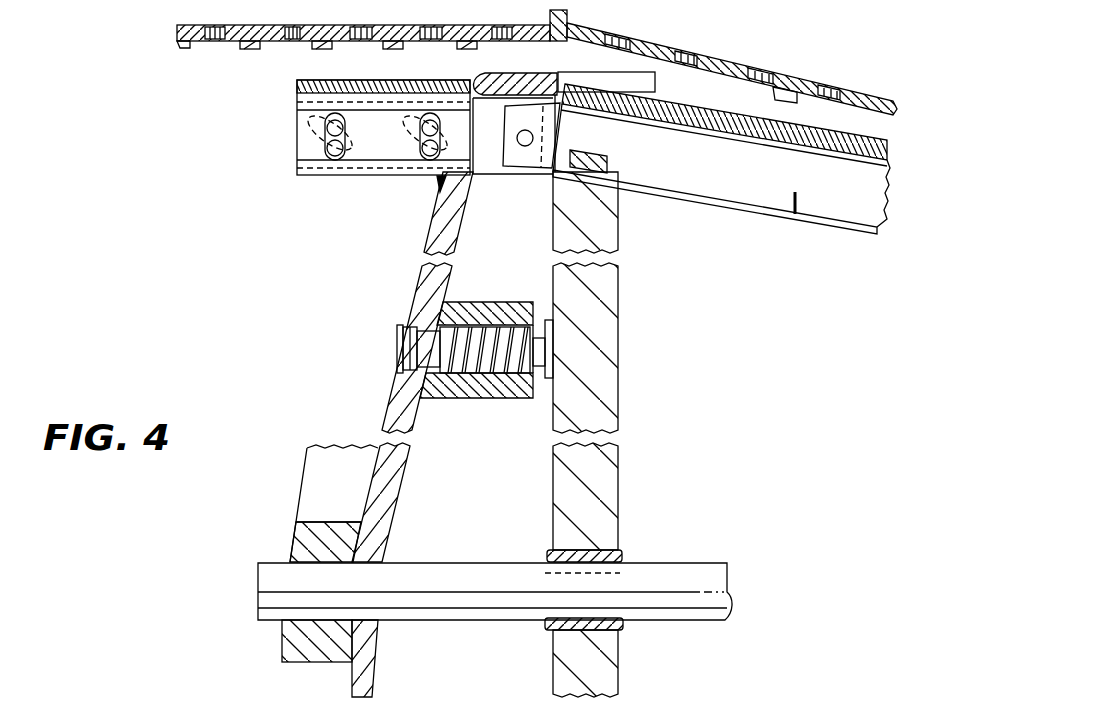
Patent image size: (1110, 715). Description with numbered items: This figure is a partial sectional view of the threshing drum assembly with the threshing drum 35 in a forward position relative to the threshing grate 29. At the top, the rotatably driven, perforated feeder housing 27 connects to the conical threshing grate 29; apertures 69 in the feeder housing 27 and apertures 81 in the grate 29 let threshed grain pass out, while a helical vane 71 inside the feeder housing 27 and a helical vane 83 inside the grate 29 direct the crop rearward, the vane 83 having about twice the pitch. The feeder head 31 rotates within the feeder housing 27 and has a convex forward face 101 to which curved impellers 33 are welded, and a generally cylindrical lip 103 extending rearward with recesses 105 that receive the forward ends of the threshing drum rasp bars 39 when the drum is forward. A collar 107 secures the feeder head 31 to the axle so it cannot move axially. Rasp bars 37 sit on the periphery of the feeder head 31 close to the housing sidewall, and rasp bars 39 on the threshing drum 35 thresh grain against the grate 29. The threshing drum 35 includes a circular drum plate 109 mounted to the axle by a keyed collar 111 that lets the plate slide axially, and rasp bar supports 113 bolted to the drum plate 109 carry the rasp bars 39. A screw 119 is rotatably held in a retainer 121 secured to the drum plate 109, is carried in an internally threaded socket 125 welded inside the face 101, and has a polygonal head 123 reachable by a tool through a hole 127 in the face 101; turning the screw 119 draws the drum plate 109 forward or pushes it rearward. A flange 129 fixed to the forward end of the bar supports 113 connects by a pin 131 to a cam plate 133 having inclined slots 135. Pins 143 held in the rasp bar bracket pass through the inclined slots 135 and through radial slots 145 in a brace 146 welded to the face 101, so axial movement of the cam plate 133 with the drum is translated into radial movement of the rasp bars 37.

The feeder housing 27 is at (178, 26).
The threshing grate 29 is at (725, 62).
The feeder head 31 is at (405, 288).
The curved impellers 33 is at (325, 445).
The threshing drum 35 is at (795, 214).
The rasp bars 37 is at (297, 88).
The rasp bars 39 is at (853, 134).
The apertures 69 is at (215, 43).
The helical vane 71 is at (180, 48).
The apertures 81 is at (828, 97).
The helical vane 83 is at (773, 98).
The forward face 101 is at (430, 233).
The cylindrical lip 103 is at (487, 78).
The recesses 105 is at (620, 76).
The collar 107 is at (302, 540).
The drum plate 109 is at (610, 290).
The collar 111 is at (623, 556).
The rasp bar supports 113 is at (707, 196).
The screw 119 is at (481, 372).
The retainer 121 is at (557, 358).
The polygonal head 123 is at (420, 345).
The internally threaded socket 125 is at (458, 392).
The hole 127 is at (403, 363).
The flange 129 is at (530, 160).
The pin 131 is at (535, 138).
The cam plate 133 is at (442, 185).
The inclined slots 135 is at (312, 117).
The pins 143 is at (327, 150).
The radial slots 145 is at (323, 162).
The brace 146 is at (367, 158).